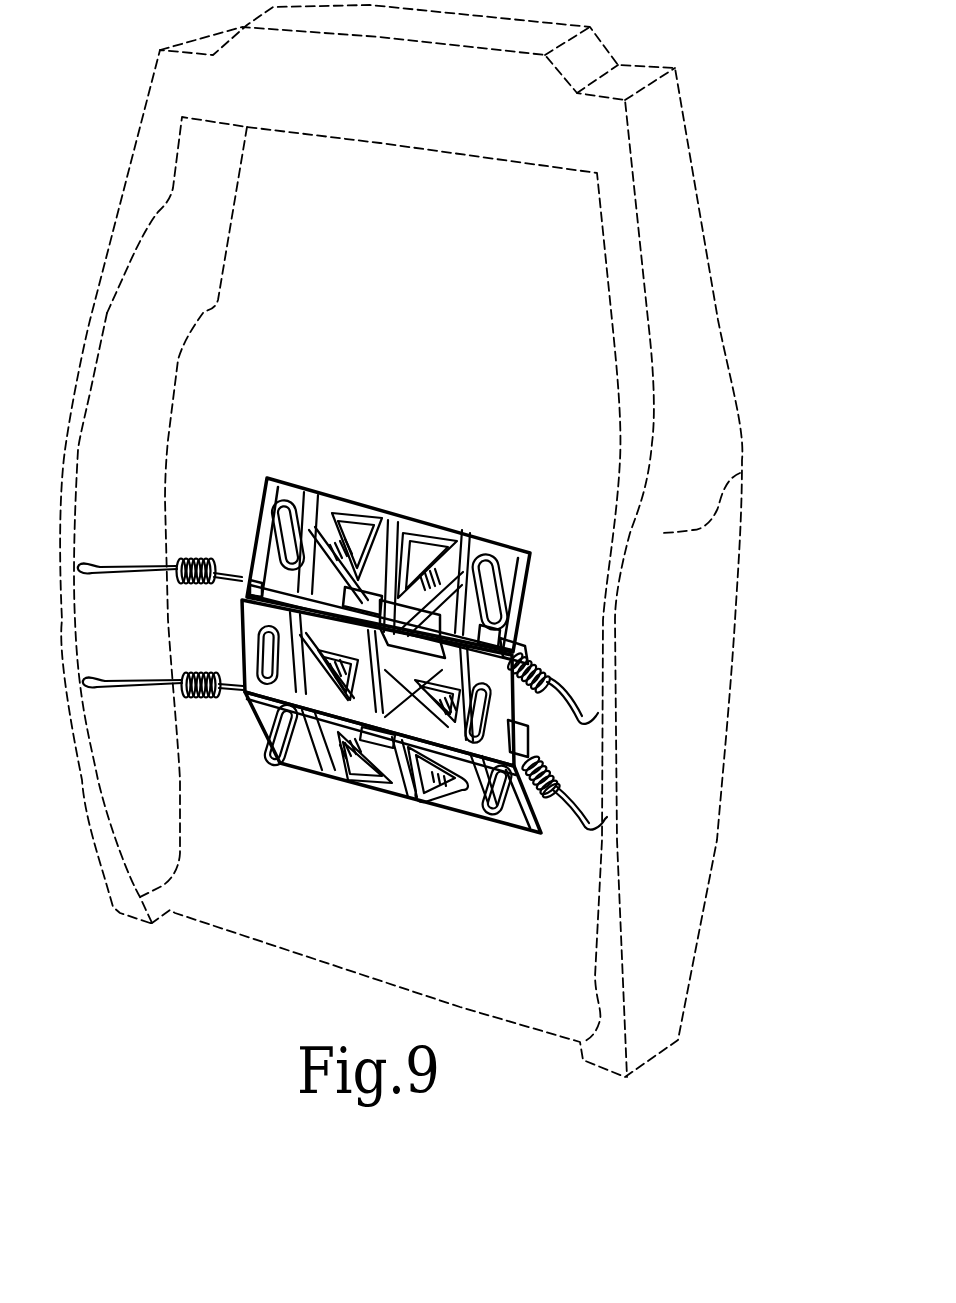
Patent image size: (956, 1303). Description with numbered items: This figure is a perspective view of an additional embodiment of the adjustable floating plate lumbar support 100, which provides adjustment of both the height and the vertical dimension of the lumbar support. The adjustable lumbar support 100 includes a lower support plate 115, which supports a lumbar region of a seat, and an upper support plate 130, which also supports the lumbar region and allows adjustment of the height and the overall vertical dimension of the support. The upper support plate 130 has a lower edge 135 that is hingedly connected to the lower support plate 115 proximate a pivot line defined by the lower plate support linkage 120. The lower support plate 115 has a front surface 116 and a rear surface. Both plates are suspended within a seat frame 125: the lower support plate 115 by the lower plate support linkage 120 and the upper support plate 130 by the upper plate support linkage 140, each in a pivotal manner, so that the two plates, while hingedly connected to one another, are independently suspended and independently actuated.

The adjustable lumbar support 100 is at (391, 621).
The lower support plate 115 is at (393, 785).
The front surface 116 is at (332, 767).
The lower plate support linkage 120 is at (200, 672).
The seat frame 125 is at (745, 475).
The upper support plate 130 is at (440, 517).
The lower edge 135 is at (523, 747).
The upper plate support linkage 140 is at (180, 557).